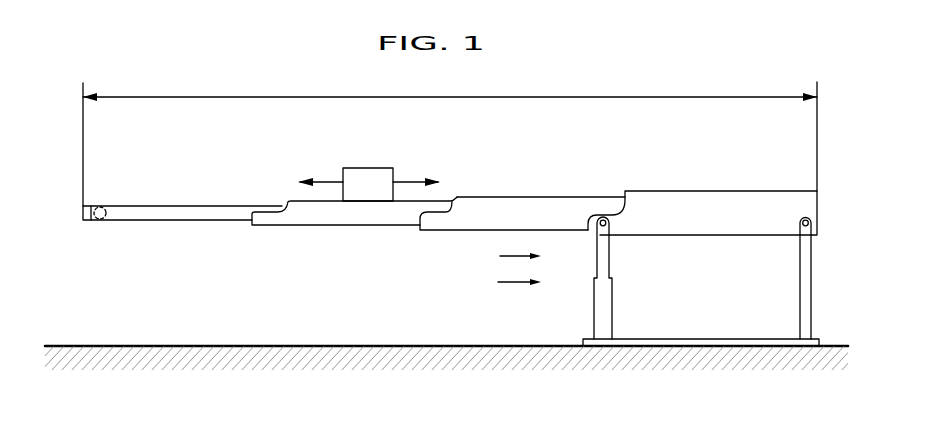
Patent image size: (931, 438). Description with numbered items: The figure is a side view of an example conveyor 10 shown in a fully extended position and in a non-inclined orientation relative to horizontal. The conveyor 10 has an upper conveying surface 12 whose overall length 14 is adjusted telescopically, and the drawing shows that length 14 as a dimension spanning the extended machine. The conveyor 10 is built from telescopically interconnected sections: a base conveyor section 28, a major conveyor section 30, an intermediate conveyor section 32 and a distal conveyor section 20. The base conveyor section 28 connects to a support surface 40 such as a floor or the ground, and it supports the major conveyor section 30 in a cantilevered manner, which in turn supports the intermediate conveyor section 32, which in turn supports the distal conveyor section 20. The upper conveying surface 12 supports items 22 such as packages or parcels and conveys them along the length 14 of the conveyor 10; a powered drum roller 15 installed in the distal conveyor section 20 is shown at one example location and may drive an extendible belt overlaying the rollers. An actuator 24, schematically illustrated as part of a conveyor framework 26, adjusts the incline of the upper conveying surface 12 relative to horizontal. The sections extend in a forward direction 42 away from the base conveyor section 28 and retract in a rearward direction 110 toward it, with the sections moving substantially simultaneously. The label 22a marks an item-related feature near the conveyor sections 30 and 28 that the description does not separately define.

The conveyor 10 is at (738, 78).
The upper conveying surface 12 is at (585, 197).
The length 14 is at (193, 96).
The powered drum roller 15 is at (83, 213).
The distal conveyor section 20 is at (157, 220).
The items 22 is at (366, 168).
The carriage travel direction 22a is at (498, 285).
The actuator 24 is at (593, 312).
The conveyor framework 26 is at (504, 260).
The base conveyor section 28 is at (692, 191).
The major conveyor section 30 is at (531, 197).
The intermediate conveyor section 32 is at (325, 225).
The support surface 40 is at (245, 346).
The forward direction 42 is at (327, 181).
The rearward direction 110 is at (408, 181).